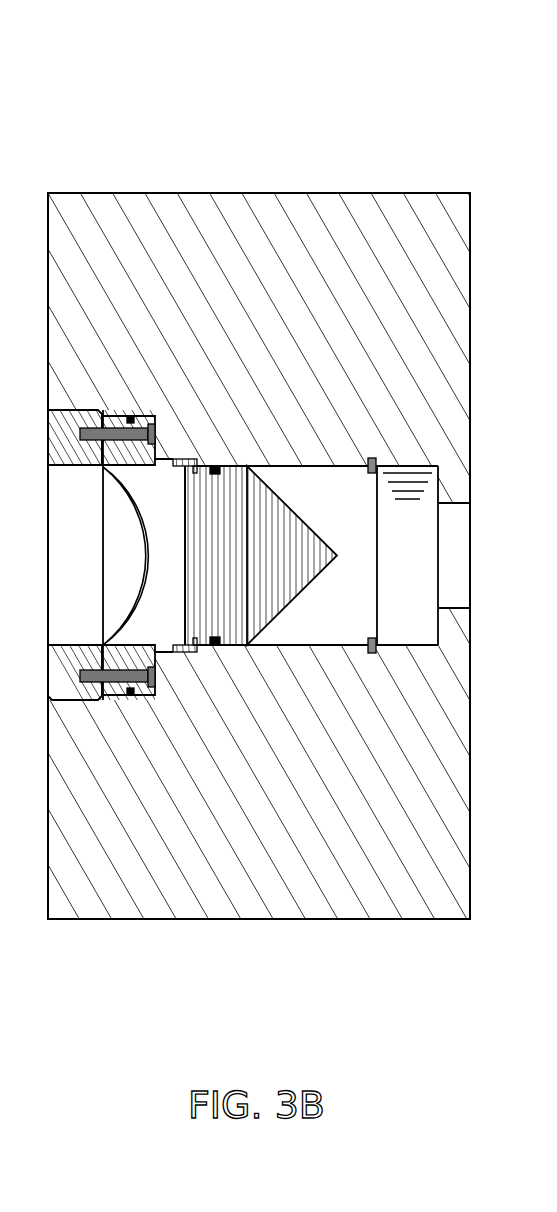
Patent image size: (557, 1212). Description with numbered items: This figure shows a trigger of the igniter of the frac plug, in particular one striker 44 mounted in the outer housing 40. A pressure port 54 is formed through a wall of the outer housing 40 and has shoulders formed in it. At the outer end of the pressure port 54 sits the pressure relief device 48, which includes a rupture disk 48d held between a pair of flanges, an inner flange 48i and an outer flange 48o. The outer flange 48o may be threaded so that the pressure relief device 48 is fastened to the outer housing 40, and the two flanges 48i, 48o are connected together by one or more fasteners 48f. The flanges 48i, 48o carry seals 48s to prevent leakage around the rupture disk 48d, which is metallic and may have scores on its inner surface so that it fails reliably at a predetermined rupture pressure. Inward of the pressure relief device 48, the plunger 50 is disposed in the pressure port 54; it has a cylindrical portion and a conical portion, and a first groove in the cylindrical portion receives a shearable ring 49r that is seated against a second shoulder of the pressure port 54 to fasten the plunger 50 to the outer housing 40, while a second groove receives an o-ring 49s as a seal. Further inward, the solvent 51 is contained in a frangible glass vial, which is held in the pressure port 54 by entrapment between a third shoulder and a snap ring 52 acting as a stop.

The outer housing 40 is at (237, 193).
The striker 44 is at (92, 67).
The pressure relief device 48 is at (164, 582).
The outer flange 48o is at (64, 432).
The inner flange 48i is at (117, 658).
The rupture disk 48d is at (143, 555).
The fastener 48f is at (115, 683).
The seal 48s is at (130, 695).
The pressure port 54 is at (84, 567).
The shearable ring 49r is at (182, 654).
The o-ring 49s is at (213, 646).
The plunger 50 is at (293, 548).
The solvent 51 is at (410, 473).
The snap ring 52 is at (376, 650).